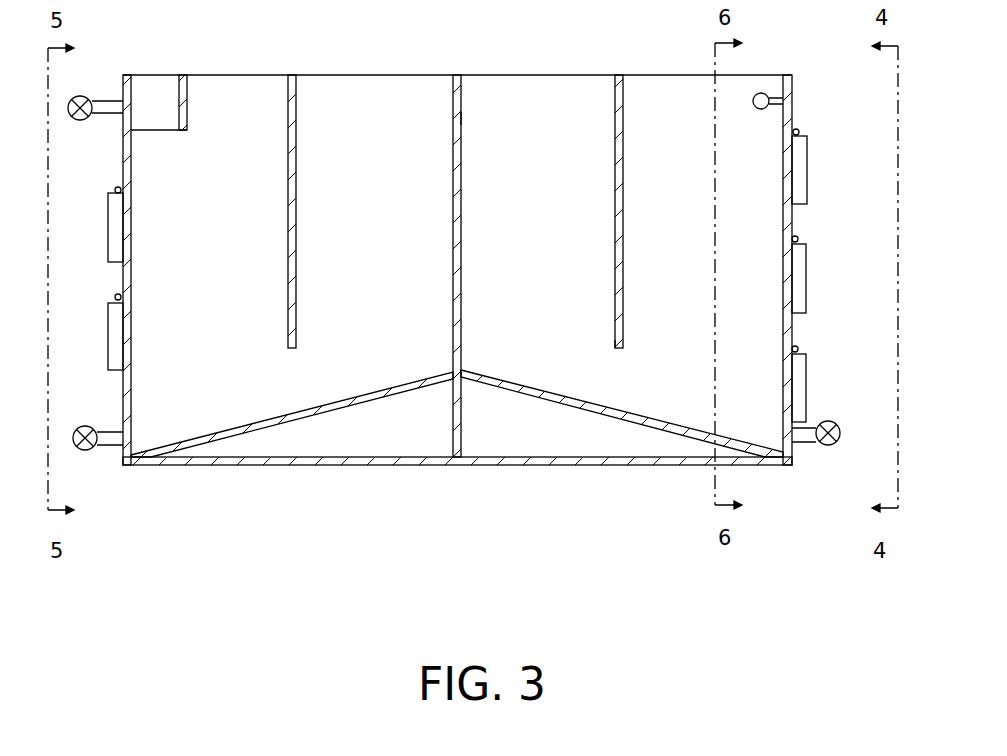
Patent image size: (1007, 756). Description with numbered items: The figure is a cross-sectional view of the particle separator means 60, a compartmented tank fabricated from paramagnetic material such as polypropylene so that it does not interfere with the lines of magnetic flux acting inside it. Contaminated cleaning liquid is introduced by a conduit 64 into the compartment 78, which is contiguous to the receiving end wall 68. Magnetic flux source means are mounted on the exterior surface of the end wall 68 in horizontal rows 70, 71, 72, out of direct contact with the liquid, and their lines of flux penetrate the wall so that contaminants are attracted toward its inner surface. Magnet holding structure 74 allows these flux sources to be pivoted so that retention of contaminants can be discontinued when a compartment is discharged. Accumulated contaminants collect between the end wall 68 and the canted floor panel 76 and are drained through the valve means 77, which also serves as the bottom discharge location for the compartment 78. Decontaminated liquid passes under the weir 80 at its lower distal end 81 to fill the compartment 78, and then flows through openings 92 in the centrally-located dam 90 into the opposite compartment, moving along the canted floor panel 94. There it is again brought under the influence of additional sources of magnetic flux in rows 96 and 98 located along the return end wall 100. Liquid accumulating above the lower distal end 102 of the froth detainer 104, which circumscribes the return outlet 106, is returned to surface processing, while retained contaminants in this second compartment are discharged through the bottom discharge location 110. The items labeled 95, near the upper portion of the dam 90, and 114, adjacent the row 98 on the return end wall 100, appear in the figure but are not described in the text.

The particle separator means 60 is at (410, 465).
The conduit 64 is at (764, 110).
The end wall 68 is at (783, 222).
The row of magnetic flux source means 70 is at (807, 186).
The row of magnetic flux source means 71 is at (806, 283).
The row of magnetic flux source means 72 is at (806, 384).
The magnet holding structure 74 is at (800, 130).
The canted floor panel 76 is at (663, 415).
The valve means 77 is at (806, 442).
The compartment 78 is at (650, 233).
The weir 80 is at (615, 216).
The lower distal end 81 is at (615, 345).
The dam 90 is at (453, 213).
The opening 92 is at (243, 211).
The canted floor panel 94 is at (250, 425).
The upper end of divider wall 95 is at (461, 118).
The row of magnetic flux sources 96 is at (108, 318).
The row of magnetic flux sources 98 is at (108, 212).
The return end wall 100 is at (131, 265).
The lower distal end 102 is at (178, 130).
The froth detainer 104 is at (187, 112).
The return outlet 106 is at (108, 100).
The bottom discharge location 110 is at (110, 430).
The sensor mount 114 is at (117, 186).